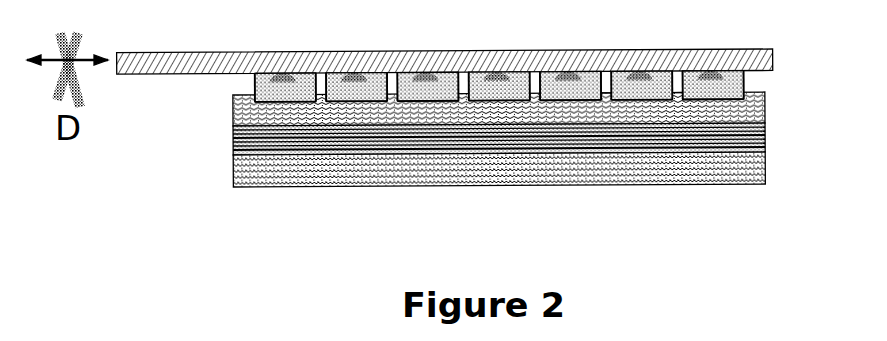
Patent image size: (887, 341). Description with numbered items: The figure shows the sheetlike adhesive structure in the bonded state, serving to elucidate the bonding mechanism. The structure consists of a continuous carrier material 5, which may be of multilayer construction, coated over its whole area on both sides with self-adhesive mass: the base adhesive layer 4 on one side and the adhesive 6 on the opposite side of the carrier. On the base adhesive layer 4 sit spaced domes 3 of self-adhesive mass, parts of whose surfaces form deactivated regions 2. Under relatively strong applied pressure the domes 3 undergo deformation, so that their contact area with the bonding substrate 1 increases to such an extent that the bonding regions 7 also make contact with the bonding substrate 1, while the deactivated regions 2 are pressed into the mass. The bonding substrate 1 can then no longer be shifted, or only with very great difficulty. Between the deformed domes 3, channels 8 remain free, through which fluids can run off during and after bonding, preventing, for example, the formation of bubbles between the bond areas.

The bonding substrate 1 is at (773, 51).
The deactivated regions 2 is at (350, 75).
The domes of self-adhesive mass 3 is at (427, 93).
The self-adhesive mass (base adhesive layer) 4 is at (743, 108).
The carrier material 5 is at (763, 137).
The adhesive on the opposite side of the carrier 6 is at (723, 167).
The bonding regions 7 is at (258, 74).
The channels 8 is at (607, 74).